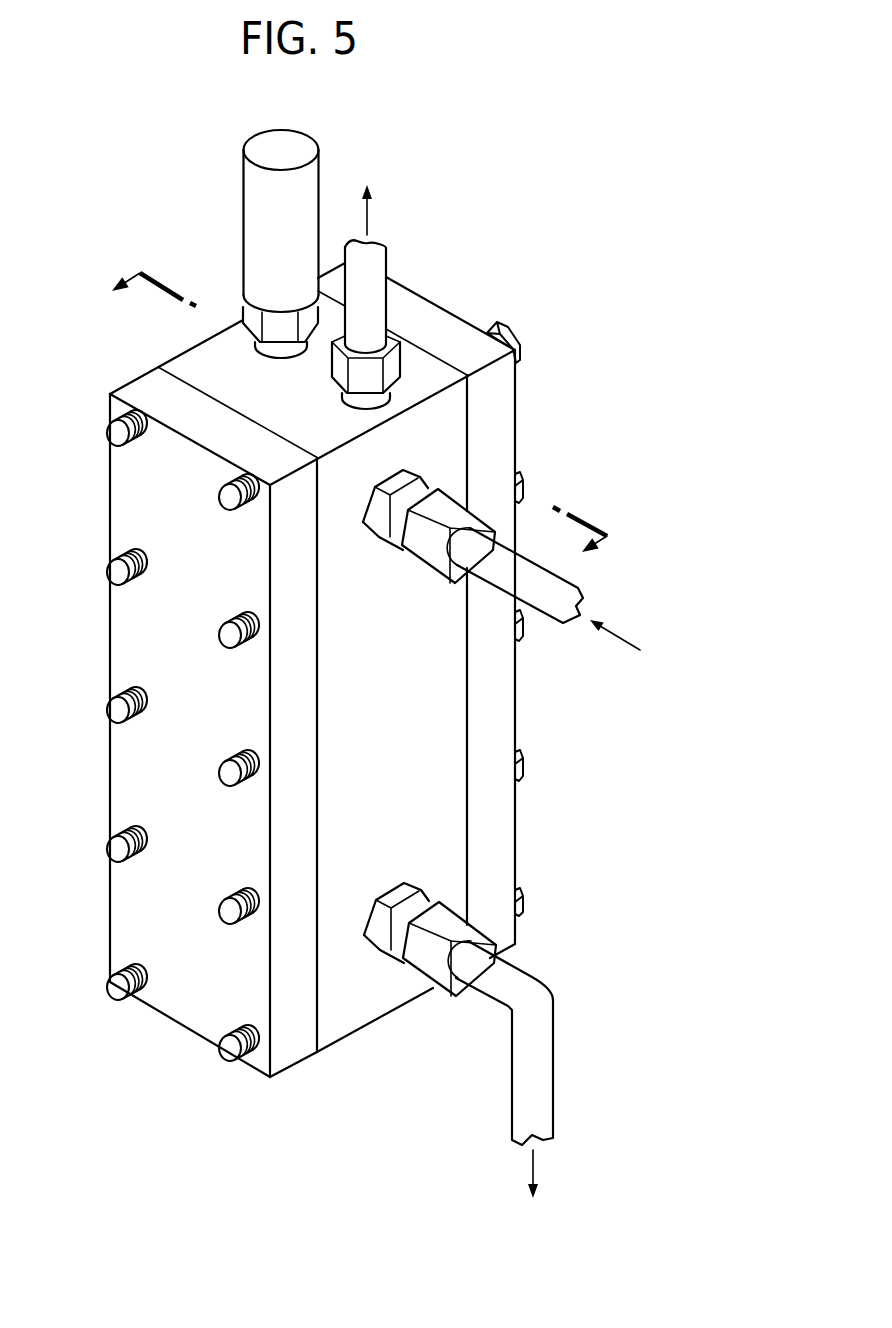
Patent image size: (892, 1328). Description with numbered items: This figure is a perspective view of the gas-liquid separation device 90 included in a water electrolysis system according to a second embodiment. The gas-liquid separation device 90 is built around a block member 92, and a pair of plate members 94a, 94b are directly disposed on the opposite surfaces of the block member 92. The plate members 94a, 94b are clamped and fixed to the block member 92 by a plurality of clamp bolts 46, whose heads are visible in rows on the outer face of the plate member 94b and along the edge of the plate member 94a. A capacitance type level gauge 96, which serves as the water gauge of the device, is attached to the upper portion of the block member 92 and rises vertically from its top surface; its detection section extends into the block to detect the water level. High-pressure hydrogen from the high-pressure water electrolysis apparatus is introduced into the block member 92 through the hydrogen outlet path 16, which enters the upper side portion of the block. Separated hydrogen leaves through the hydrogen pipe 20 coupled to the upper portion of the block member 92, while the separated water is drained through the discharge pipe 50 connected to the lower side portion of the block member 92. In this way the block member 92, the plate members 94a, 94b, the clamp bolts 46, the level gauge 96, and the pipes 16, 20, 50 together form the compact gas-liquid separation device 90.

The gas-liquid separation device 90 is at (404, 106).
The block member 92 is at (232, 338).
The plate member 94a is at (505, 435).
The plate member 94b is at (123, 893).
The clamp bolt 46 is at (513, 353).
The capacitance type level gauge 96 is at (320, 146).
The hydrogen pipe 20 is at (383, 303).
The hydrogen outlet path 16 is at (545, 612).
The discharge pipe 50 is at (540, 1053).